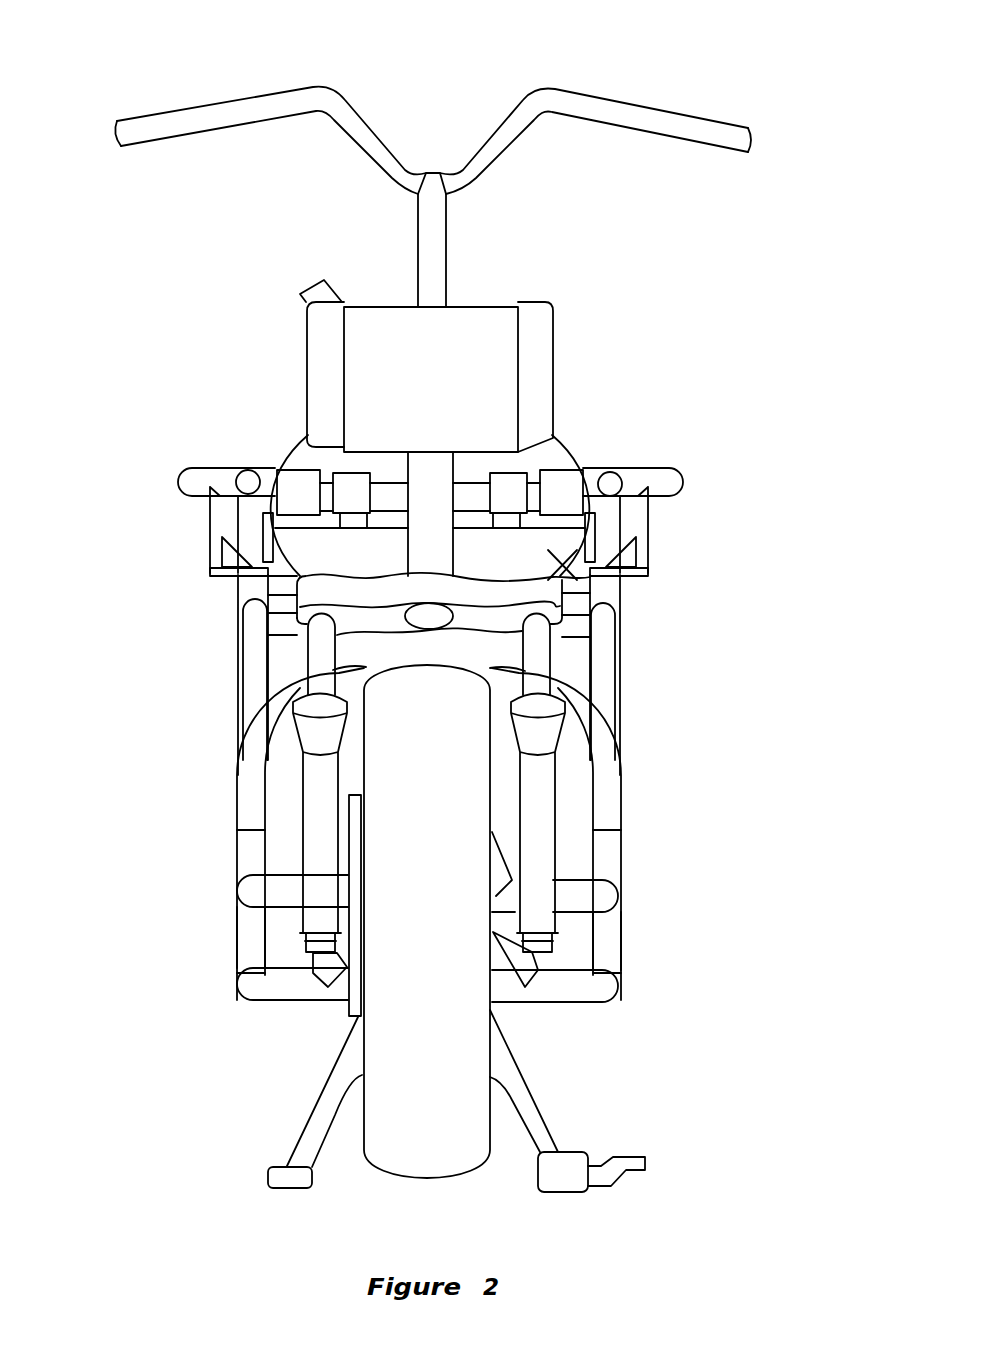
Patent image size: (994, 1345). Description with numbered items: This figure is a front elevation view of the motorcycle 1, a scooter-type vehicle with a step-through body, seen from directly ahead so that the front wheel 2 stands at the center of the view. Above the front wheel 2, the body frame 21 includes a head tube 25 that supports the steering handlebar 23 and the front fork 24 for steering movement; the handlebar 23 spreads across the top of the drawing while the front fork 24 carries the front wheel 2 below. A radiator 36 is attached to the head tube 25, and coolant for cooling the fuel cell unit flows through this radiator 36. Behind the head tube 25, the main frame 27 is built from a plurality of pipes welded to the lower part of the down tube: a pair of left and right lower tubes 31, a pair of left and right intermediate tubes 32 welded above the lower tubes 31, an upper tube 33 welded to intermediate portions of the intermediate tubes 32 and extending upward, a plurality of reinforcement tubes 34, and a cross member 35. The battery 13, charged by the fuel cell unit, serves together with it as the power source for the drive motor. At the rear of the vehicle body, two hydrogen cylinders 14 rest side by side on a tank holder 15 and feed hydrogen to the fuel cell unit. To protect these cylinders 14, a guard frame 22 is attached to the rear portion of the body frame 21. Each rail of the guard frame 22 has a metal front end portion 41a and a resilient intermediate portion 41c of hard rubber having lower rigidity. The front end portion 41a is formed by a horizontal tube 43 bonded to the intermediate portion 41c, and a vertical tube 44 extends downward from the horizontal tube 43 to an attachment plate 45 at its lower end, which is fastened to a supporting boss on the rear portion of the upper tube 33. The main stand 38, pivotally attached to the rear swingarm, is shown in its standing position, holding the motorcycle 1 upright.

The motorcycle 1 is at (691, 81).
The front wheel 2 is at (450, 1178).
The battery 13 is at (370, 648).
The hydrogen cylinders 14 is at (290, 443).
The tank holder 15 is at (555, 553).
The body frame 21 is at (622, 672).
The guard frame 22 is at (688, 479).
The steering handlebar 23 is at (607, 97).
The front fork 24 is at (560, 823).
The head tube 25 is at (467, 470).
The main frame 27 is at (614, 953).
The lower tubes 31 is at (240, 986).
The intermediate tubes 32 is at (240, 888).
The upper tube 33 is at (245, 690).
The reinforcement tubes 34 is at (248, 938).
The cross member 35 is at (602, 775).
The radiator 36 is at (560, 352).
The main stand 38 is at (545, 1115).
The front end portion 41a is at (228, 468).
The intermediate portion 41c is at (178, 481).
The horizontal tube 43 is at (205, 478).
The vertical tube 44 is at (215, 520).
The attachment plate 45 is at (215, 573).